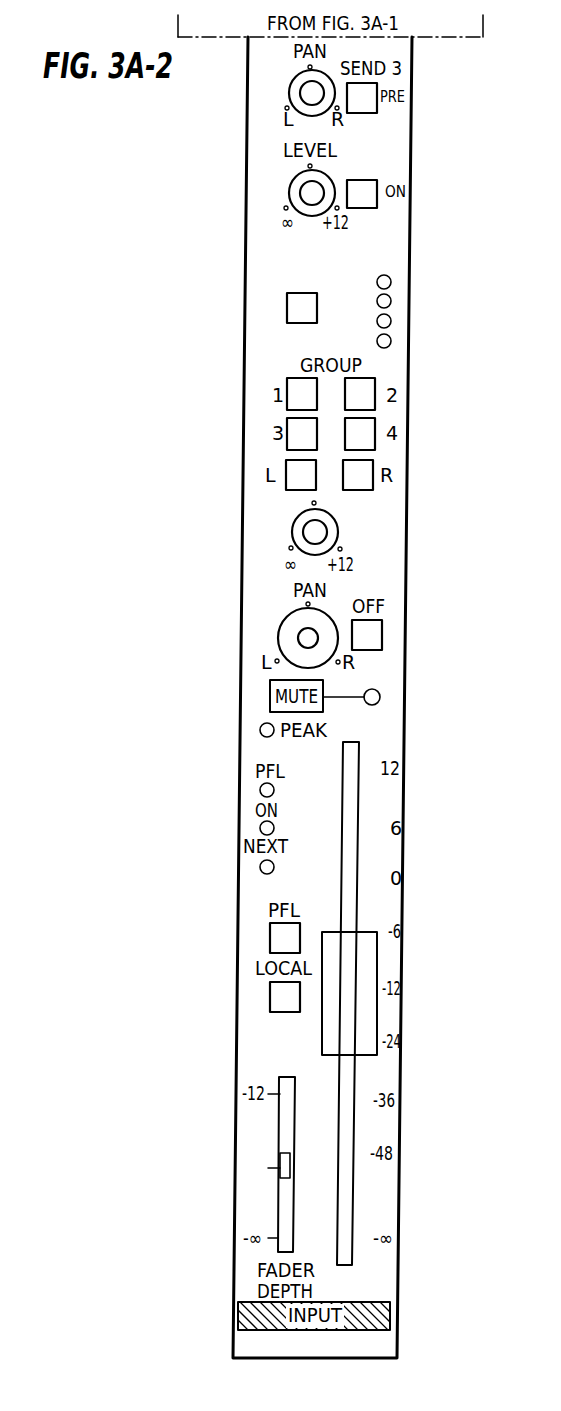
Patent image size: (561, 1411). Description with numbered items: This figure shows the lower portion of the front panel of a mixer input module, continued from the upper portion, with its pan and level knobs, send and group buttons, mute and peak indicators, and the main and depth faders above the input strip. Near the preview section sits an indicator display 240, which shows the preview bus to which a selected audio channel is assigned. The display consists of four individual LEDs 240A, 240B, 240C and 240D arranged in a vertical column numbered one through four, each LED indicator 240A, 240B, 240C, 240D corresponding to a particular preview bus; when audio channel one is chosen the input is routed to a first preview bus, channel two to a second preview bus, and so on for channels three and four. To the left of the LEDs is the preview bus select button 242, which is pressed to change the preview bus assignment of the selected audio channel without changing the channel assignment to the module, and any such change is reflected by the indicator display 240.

The indicator display 240 is at (388, 252).
The LED indicator 240A is at (391, 285).
The LED indicator 240B is at (391, 305).
The LED indicator 240C is at (391, 325).
The LED indicator 240D is at (391, 345).
The preview bus select button 242 is at (287, 308).